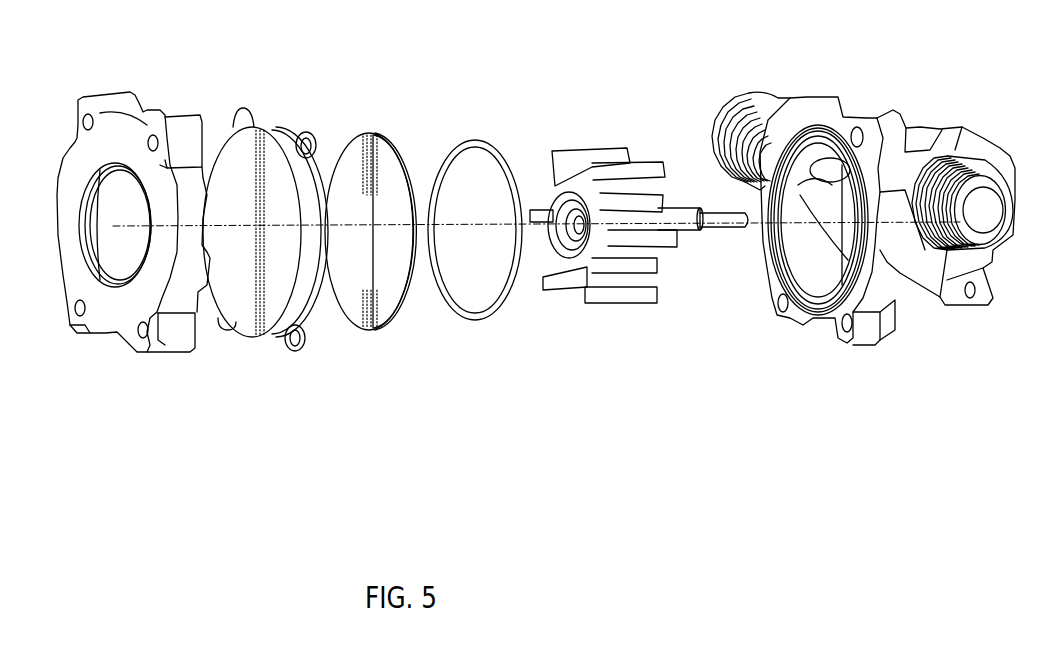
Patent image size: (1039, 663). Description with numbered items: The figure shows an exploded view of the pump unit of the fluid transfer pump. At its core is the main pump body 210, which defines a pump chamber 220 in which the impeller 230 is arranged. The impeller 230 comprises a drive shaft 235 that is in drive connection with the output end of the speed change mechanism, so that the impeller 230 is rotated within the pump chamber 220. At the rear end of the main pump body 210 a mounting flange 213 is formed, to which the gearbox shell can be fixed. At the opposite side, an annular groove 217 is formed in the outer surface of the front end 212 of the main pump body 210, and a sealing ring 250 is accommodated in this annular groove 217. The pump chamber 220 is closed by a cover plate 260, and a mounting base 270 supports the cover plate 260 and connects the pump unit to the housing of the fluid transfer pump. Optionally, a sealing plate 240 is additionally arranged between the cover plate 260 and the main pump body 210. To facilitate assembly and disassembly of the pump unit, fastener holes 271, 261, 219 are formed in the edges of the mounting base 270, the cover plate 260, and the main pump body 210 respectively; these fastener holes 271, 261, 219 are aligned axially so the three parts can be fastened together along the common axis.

The main pump body 210 is at (928, 100).
The front end 212 is at (873, 315).
The mounting flange 213 is at (987, 307).
The annular groove 217 is at (810, 315).
The fastener hole 219 is at (884, 125).
The pump chamber 220 is at (796, 120).
The impeller 230 is at (615, 296).
The drive shaft 235 is at (687, 229).
The sealing plate 240 is at (373, 332).
The sealing ring 250 is at (483, 321).
The cover plate 260 is at (257, 335).
The fastener hole 261 is at (312, 133).
The mounting base 270 is at (118, 327).
The fastener hole 271 is at (180, 130).